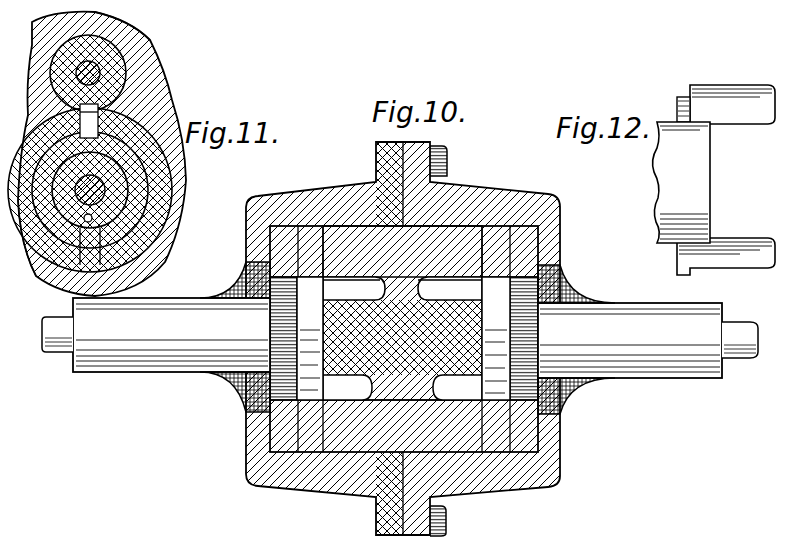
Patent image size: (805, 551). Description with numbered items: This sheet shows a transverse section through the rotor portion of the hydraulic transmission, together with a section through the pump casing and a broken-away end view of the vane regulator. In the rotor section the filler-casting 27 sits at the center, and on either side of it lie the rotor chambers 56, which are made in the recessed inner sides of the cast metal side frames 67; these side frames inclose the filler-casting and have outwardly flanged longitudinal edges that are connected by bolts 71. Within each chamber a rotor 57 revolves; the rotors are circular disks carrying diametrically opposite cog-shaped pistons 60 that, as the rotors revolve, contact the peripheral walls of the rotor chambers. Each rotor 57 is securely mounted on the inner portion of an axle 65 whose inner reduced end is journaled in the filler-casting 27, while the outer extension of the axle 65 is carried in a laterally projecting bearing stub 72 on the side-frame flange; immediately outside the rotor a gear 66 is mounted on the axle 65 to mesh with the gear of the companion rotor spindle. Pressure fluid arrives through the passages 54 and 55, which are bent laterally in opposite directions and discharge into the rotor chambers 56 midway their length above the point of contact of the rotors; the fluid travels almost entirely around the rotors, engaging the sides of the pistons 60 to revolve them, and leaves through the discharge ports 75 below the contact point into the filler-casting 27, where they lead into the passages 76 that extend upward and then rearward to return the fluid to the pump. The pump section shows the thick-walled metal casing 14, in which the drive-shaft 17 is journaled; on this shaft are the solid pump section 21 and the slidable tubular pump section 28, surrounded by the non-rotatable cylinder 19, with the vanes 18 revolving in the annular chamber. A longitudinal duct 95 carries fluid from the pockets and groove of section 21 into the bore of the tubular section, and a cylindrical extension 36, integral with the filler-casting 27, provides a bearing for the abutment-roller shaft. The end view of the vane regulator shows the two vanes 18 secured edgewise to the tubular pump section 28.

In FIG. 11, the metal casing 14 is at (124, 30).
In FIG. 11, the cylindrical extension 36 is at (118, 70).
In FIG. 11, the vanes 18 is at (150, 103).
In FIG. 12, the vanes 18 is at (763, 120).
In FIG. 11, the non-rotatable cylinder 19 is at (182, 174).
In FIG. 11, the drive-shaft 17 is at (106, 186).
In FIG. 11, the tubular pump section 28 is at (138, 202).
In FIG. 12, the tubular pump section 28 is at (681, 182).
In FIG. 11, the solid pump section 21 is at (150, 224).
In FIG. 11, the longitudinal duct 95 is at (48, 270).
In FIG. 10, the passage 55 is at (337, 286).
In FIG. 10, the passage 54 is at (418, 290).
In FIG. 10, the discharge ports 75 is at (402, 387).
In FIG. 10, the passages 76 is at (412, 350).
In FIG. 10, the rotors 57 is at (283, 332).
In FIG. 10, the pistons 60 is at (312, 345).
In FIG. 10, the gears 66 is at (258, 384).
In FIG. 10, the side frames 67 is at (247, 468).
In FIG. 10, the bolts 71 is at (441, 150).
In FIG. 10, the bearing stubs 72 is at (397, 338).
In FIG. 10, the axles 65 is at (50, 352).
In FIG. 10, the rotor chambers 56 is at (370, 0).
In FIG. 10, the filler-casting 27 is at (531, 0).